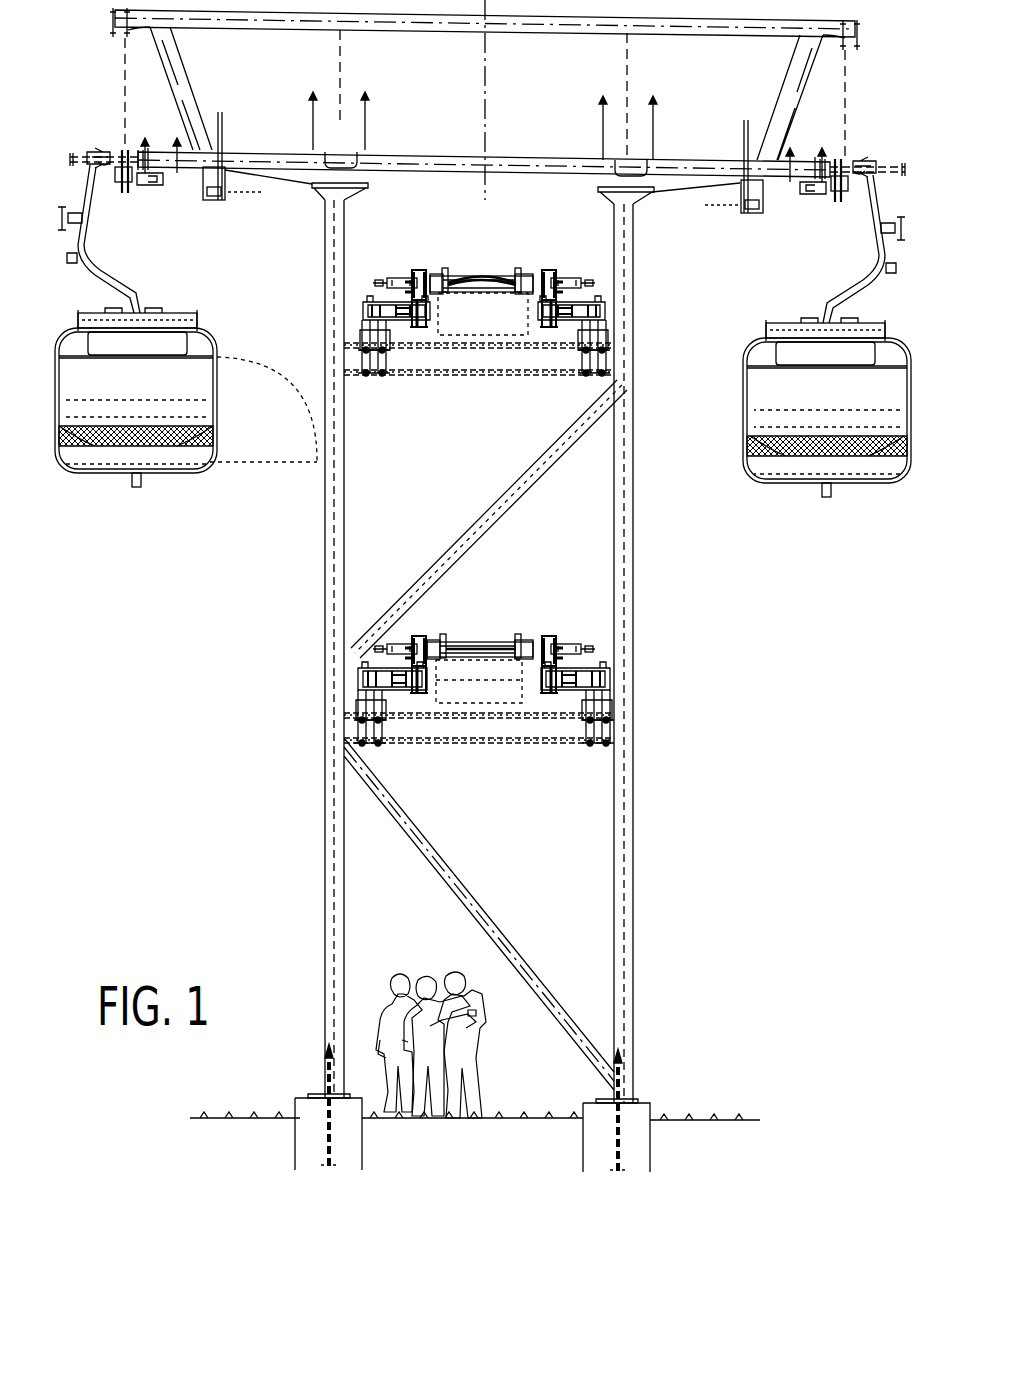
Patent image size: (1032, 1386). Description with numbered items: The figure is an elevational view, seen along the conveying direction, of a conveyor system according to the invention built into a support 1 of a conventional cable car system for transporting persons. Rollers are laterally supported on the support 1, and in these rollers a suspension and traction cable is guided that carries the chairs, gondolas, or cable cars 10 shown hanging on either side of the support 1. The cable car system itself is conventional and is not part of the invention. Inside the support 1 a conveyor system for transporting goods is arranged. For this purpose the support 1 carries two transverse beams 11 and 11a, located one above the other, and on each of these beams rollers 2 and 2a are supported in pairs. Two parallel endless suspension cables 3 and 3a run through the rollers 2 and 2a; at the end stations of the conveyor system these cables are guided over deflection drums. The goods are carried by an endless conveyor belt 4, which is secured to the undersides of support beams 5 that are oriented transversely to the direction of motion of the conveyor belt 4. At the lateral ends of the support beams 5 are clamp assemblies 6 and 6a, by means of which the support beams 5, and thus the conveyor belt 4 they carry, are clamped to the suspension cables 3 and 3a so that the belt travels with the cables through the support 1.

The support 1 is at (633, 552).
The roller 2 is at (600, 315).
The roller 2a is at (362, 313).
The endless suspension cable 3 is at (548, 280).
The endless suspension cable 3a is at (418, 278).
The endless conveyor belt 4 is at (506, 296).
The support beam 5 is at (502, 275).
The clamp assembly 6 is at (585, 287).
The clamp assembly 6a is at (380, 286).
The cable car 10 is at (107, 443).
The transverse beam 11 is at (565, 368).
The transverse beam 11a is at (510, 738).